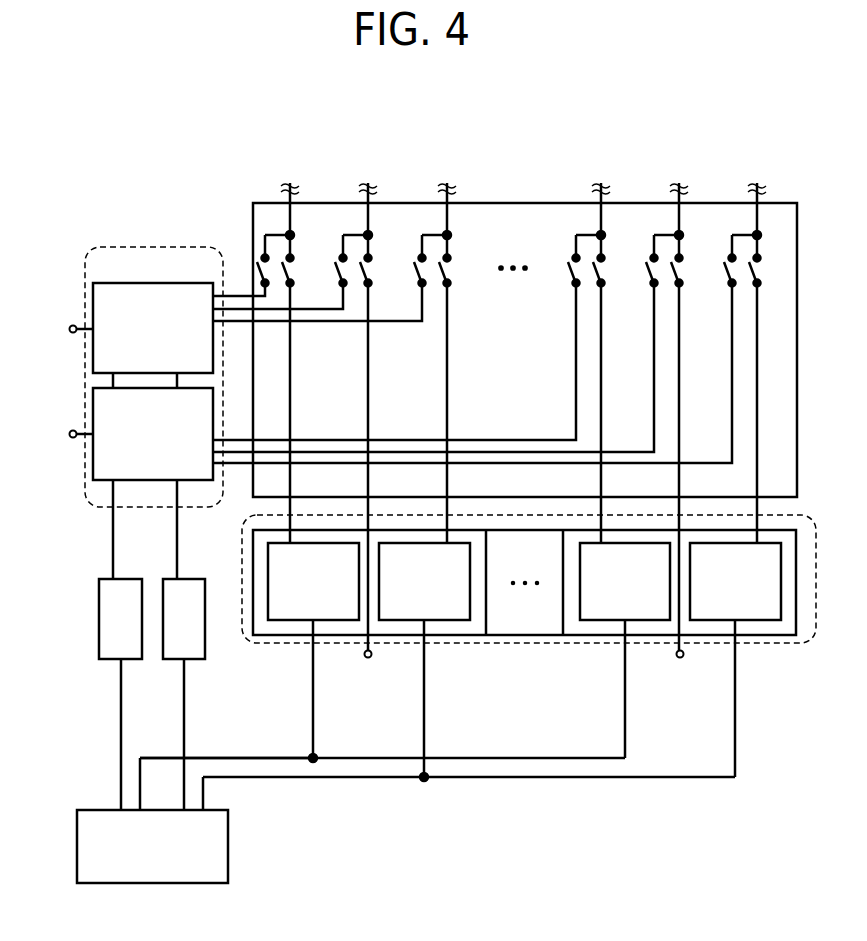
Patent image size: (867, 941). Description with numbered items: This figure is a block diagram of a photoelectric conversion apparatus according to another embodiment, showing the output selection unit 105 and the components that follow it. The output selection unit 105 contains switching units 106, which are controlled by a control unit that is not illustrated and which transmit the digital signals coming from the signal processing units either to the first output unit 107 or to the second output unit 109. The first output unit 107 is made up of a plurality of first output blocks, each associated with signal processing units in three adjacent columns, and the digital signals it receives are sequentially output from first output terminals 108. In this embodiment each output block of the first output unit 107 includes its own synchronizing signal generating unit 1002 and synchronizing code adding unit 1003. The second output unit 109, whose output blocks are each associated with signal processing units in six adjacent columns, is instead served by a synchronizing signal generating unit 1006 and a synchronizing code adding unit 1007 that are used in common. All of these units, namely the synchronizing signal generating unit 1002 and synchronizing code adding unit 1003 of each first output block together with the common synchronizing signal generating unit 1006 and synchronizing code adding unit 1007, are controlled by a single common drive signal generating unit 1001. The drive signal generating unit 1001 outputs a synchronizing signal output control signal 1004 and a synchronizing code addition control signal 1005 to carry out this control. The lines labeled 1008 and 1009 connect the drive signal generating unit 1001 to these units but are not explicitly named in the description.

The output selection unit 105 is at (253, 203).
The switching unit 106 is at (262, 248).
The first output unit 107 is at (242, 533).
The first output terminal 108 is at (370, 658).
The second output unit 109 is at (125, 247).
The drive signal generating unit 1001 is at (102, 808).
The synchronizing signal generating unit 1002 is at (302, 622).
The synchronizing code adding unit 1003 is at (448, 622).
The synchronizing signal output control signal 1004 is at (508, 758).
The synchronizing code addition control signal 1005 is at (633, 778).
The synchronizing signal generating unit 1006 is at (100, 578).
The synchronizing code adding unit 1007 is at (187, 661).
The wiring 1008 is at (120, 702).
The wiring 1009 is at (184, 740).